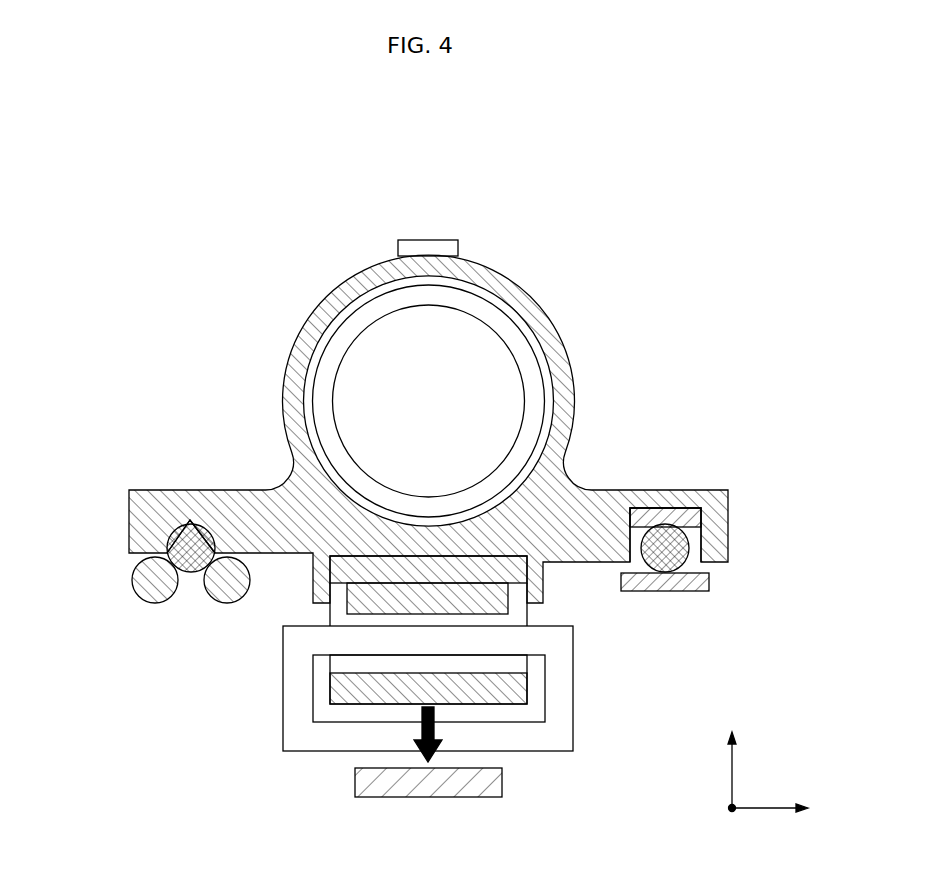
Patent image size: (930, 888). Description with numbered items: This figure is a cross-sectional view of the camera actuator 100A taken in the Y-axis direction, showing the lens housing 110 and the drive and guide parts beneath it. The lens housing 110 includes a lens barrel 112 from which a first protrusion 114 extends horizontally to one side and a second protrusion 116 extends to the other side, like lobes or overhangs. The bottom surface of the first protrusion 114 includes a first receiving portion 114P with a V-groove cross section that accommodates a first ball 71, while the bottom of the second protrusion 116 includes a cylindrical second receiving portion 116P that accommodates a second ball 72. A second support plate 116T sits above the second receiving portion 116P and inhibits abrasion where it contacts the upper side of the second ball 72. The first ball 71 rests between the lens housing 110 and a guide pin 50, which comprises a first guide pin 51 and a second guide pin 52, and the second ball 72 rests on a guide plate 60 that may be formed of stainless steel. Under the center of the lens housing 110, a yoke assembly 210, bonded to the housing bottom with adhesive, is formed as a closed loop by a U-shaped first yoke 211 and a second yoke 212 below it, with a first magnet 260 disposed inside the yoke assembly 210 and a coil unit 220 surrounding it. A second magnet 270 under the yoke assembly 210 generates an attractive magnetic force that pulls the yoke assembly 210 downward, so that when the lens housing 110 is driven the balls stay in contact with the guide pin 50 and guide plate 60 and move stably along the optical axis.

The camera actuator 100A is at (168, 113).
The lens housing 110 is at (707, 166).
The lens barrel 112 is at (483, 268).
The first protrusion 114 is at (225, 490).
The first receiving portion 114P is at (150, 531).
The second protrusion 116 is at (655, 490).
The second support plate 116T is at (690, 517).
The second receiving portion 116P is at (701, 541).
The first ball 71 is at (189, 546).
The second ball 72 is at (667, 545).
The guide plate 60 is at (709, 575).
The guide pin 50 is at (57, 564).
The first guide pin 51 is at (147, 572).
The second guide pin 52 is at (222, 593).
The yoke assembly 210 is at (148, 677).
The first yoke 211 is at (340, 570).
The second yoke 212 is at (340, 688).
The coil unit 220 is at (557, 643).
The first magnet 260 is at (503, 602).
The second magnet 270 is at (488, 783).